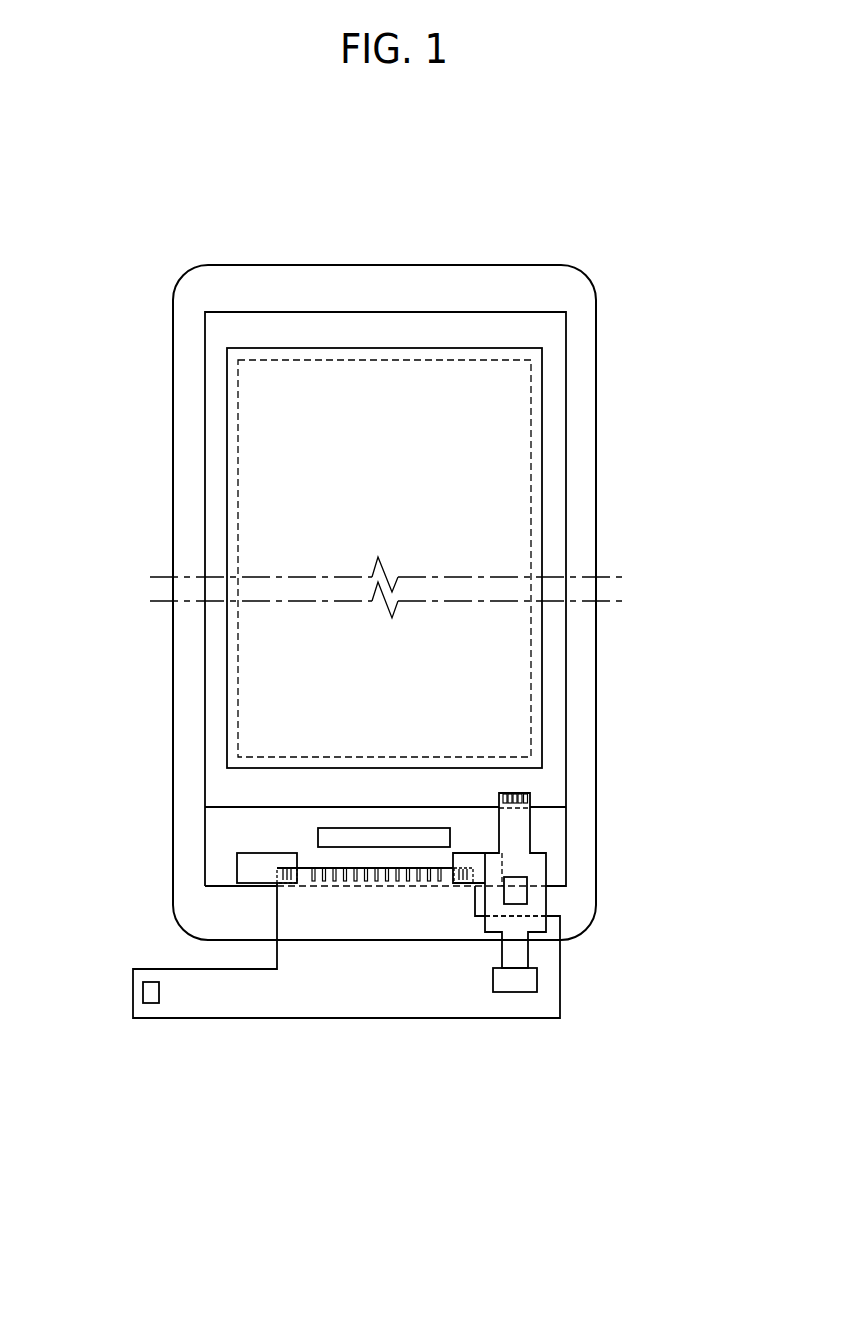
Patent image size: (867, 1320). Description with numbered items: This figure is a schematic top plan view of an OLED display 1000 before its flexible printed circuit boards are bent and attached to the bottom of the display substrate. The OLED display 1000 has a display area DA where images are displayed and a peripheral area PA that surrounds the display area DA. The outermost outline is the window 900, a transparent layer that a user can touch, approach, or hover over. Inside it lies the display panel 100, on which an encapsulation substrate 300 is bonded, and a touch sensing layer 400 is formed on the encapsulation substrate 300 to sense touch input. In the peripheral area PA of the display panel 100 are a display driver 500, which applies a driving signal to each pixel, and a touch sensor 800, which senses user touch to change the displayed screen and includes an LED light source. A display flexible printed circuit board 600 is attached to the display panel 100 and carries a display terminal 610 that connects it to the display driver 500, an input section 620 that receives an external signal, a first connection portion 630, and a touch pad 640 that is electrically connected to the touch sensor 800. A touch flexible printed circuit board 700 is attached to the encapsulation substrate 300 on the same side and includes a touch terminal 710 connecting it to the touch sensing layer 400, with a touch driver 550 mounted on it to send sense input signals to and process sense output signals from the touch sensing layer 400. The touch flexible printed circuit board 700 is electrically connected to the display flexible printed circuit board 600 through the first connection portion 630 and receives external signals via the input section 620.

The OLED display 1000 is at (411, 184).
The window 900 is at (509, 265).
The display panel 100 is at (566, 685).
The peripheral area PA is at (544, 331).
The touch sensing layer 400 is at (543, 385).
The display area DA is at (531, 440).
The display driver 500 is at (318, 838).
The touch sensor 800 is at (237, 870).
The display flexible printed circuit board 600 is at (299, 1016).
The display terminal 610 is at (355, 881).
The touch pad 640 is at (275, 874).
The input section 620 is at (150, 1004).
The first connection portion 630 is at (513, 993).
The encapsulation substrate 300 is at (547, 807).
The touch terminal 710 is at (530, 795).
The touch driver 550 is at (527, 897).
The touch flexible printed circuit board 700 is at (547, 908).